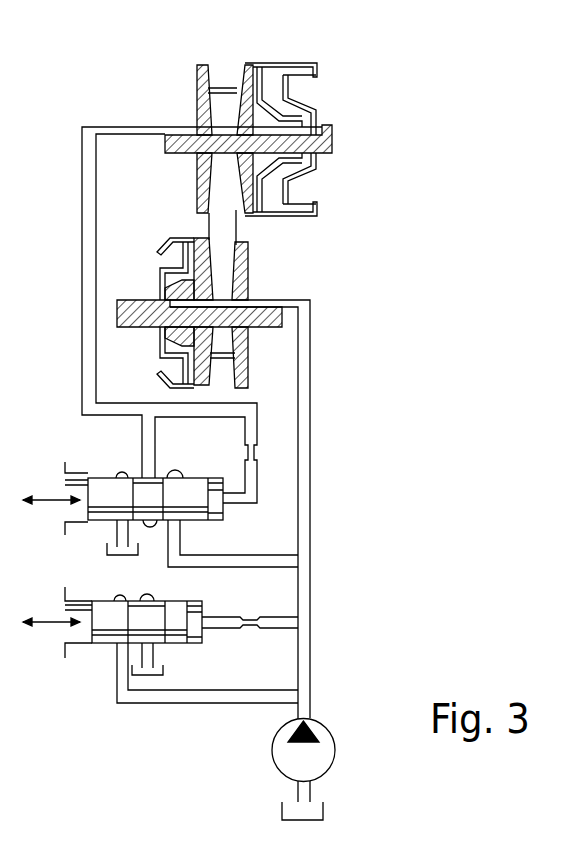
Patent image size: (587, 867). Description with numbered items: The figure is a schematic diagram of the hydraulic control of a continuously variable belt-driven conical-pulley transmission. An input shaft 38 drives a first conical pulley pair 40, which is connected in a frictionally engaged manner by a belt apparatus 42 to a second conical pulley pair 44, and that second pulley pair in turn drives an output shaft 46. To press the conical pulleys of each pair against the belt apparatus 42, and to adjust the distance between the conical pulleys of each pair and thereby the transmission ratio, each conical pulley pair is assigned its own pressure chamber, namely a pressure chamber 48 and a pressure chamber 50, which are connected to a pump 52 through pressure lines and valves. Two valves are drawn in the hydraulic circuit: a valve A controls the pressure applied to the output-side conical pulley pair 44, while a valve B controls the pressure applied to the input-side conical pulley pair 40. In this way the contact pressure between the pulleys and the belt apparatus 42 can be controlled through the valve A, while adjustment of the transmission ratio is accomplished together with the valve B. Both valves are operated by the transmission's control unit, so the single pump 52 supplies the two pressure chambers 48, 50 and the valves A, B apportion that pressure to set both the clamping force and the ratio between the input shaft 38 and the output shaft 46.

The input shaft 38 is at (332, 143).
The first conical pulley pair 40 is at (197, 84).
The belt apparatus 42 is at (222, 228).
The second conical pulley pair 44 is at (248, 284).
The output shaft 46 is at (263, 330).
The pressure chamber 48 is at (320, 106).
The pressure chamber 50 is at (162, 340).
The pump 52 is at (287, 757).
The valve A is at (110, 625).
The valve B is at (101, 488).